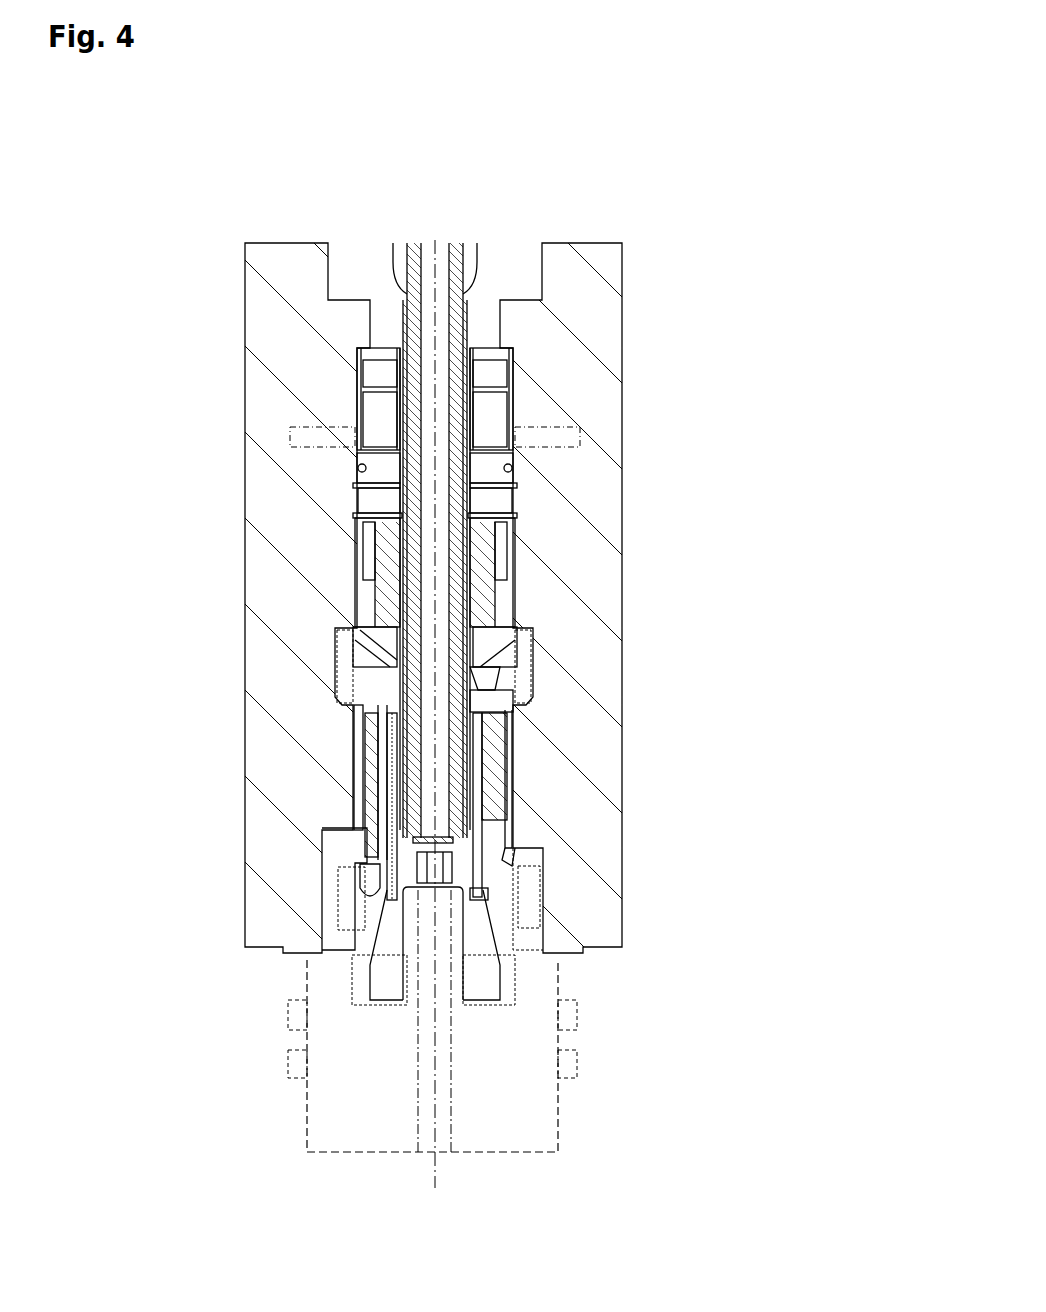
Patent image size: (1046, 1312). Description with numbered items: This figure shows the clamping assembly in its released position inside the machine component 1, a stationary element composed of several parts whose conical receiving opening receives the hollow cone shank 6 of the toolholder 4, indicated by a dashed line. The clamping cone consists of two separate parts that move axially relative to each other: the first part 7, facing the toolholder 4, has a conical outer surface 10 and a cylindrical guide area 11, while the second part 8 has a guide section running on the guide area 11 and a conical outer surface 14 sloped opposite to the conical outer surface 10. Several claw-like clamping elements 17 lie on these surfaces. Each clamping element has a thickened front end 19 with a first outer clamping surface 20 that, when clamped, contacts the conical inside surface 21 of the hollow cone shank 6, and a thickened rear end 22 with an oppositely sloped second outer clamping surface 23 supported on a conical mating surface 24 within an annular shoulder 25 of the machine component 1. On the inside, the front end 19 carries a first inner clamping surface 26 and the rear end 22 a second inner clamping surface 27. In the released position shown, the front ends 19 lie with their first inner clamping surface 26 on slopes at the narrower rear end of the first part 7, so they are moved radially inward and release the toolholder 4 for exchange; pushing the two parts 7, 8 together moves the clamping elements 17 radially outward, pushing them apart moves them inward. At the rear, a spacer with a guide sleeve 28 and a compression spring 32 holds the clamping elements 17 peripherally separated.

The machine component 1 is at (653, 355).
The toolholder 4 is at (493, 1070).
The hollow cone shank 6 is at (537, 880).
The first part of the clamping cone 7 is at (477, 840).
The second part of the clamping cone 8 is at (490, 622).
The conical outer surface 10 is at (493, 928).
The cylindrical guide area 11 is at (400, 847).
The conical outer surface 14 is at (505, 697).
The clamping elements 17 is at (373, 778).
The front end 19 is at (373, 887).
The first outer clamping surface 20 is at (502, 863).
The conical inside surface 21 is at (345, 870).
The rear end 22 is at (487, 678).
The second outer clamping surface 23 is at (345, 707).
The conical mating surface 24 is at (527, 703).
The annular shoulder 25 is at (515, 657).
The first inner clamping surface 26 is at (390, 892).
The second inner clamping surface 27 is at (382, 690).
The guide sleeve 28 is at (357, 523).
The compression spring 32 is at (370, 557).